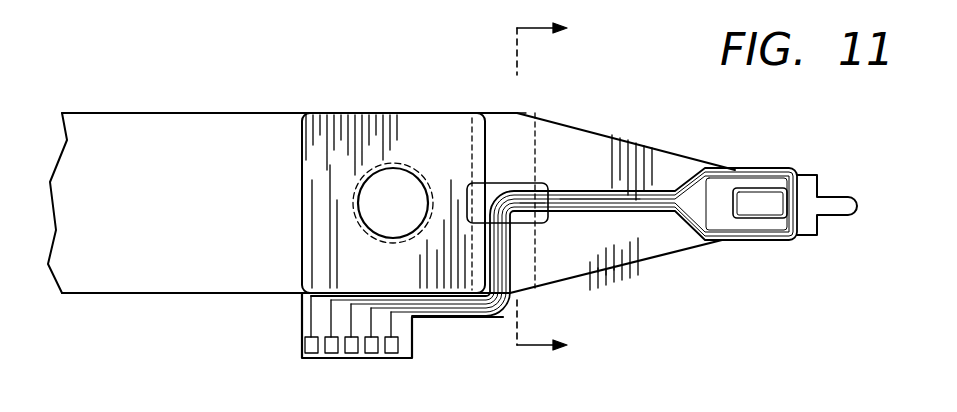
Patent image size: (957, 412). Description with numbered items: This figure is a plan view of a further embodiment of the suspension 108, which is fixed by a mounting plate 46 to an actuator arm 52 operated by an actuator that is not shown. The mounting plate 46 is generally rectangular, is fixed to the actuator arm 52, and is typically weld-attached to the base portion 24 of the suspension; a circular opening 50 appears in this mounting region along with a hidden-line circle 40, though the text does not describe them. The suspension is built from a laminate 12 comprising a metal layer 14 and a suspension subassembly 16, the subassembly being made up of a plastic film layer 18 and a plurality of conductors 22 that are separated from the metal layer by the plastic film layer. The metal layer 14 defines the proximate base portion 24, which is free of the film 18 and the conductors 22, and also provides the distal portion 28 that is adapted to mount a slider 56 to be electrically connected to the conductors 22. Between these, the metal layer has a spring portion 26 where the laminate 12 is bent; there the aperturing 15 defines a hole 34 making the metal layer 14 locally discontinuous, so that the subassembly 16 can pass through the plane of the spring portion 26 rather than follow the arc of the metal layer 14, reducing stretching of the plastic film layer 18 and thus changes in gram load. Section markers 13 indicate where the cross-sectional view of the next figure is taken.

The suspension 108 is at (52, 140).
The actuator arm 52 is at (112, 122).
The swage boss hole 50 is at (373, 197).
The mounting plate 46 is at (306, 190).
The base portion 24 is at (367, 113).
The swage boss (hidden) 40 is at (420, 160).
The aperturing 15 is at (458, 128).
The spring portion 26 is at (517, 120).
The laminate 12 is at (592, 128).
The suspension subassembly 16 is at (644, 190).
The slider 56 is at (767, 200).
The metal layer 14 is at (578, 257).
The hole 34 is at (523, 224).
The conductors 22 is at (647, 207).
The distal portion 28 is at (690, 238).
The plastic film layer 18 is at (484, 320).
The section line 13- 13 is at (562, 190).